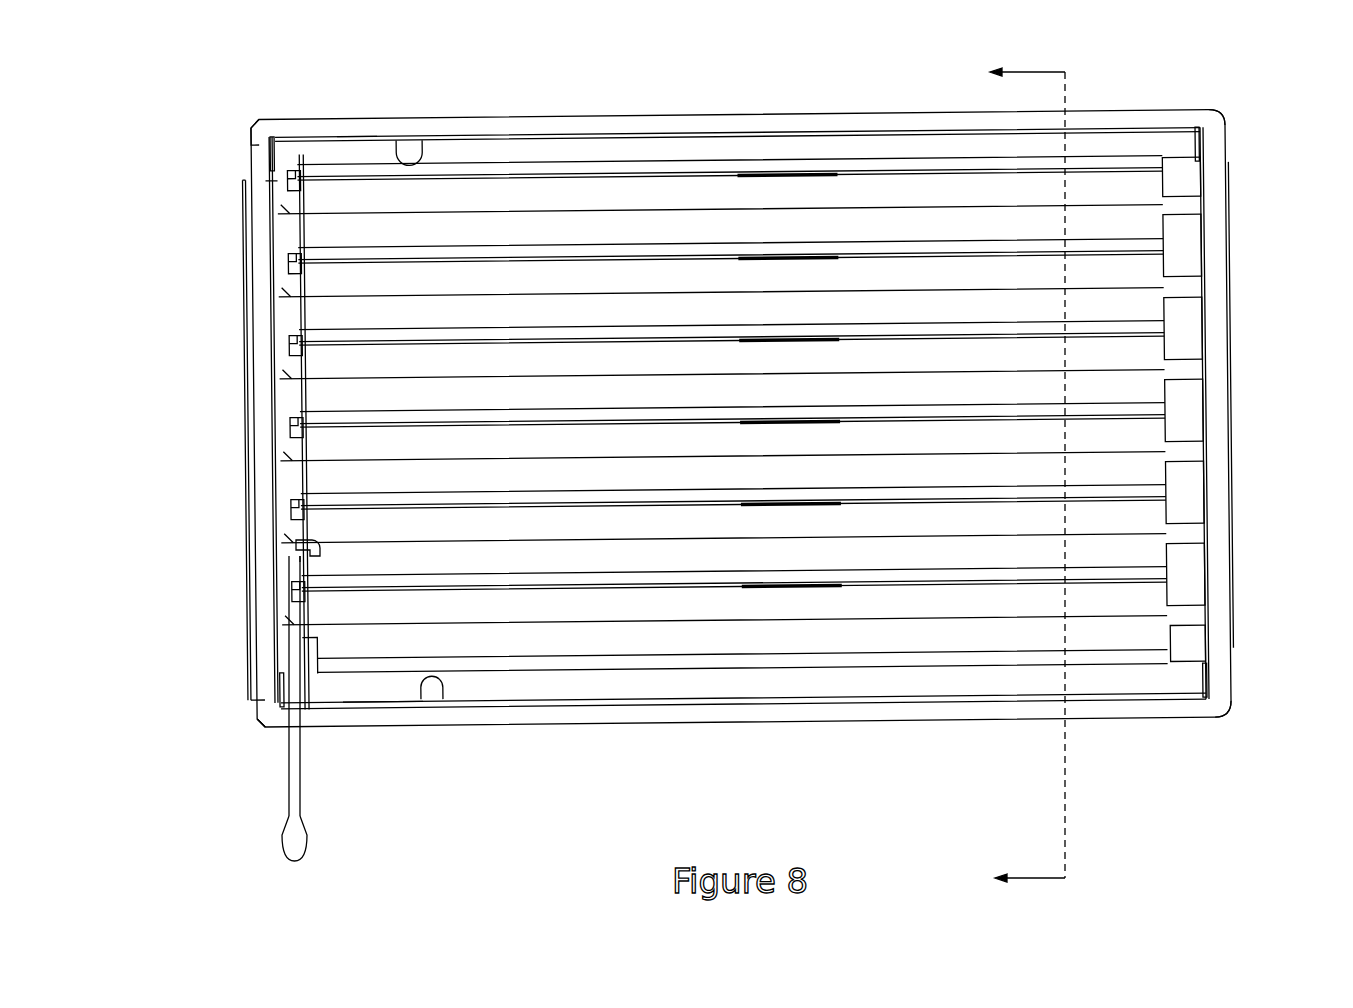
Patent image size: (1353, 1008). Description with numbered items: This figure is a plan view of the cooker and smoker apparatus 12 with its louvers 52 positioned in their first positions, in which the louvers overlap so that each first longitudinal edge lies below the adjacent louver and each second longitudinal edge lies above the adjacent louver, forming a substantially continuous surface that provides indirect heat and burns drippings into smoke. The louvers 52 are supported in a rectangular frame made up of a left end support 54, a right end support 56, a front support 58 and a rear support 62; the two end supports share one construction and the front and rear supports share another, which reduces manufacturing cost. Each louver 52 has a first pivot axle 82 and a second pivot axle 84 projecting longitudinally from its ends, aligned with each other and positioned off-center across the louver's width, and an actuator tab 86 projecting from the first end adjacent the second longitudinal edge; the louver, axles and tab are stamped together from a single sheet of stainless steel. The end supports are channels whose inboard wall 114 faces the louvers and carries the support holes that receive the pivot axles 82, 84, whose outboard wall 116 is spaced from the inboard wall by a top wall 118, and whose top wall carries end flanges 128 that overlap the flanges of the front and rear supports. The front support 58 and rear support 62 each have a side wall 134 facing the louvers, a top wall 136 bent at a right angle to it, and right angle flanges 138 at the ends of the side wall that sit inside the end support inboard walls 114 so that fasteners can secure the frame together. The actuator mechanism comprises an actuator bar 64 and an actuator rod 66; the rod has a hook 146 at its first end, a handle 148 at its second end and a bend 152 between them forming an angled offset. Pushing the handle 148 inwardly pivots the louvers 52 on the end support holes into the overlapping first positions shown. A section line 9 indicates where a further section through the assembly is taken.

The section line 9- 9 is at (1014, 477).
The cooker and smoker apparatus 12 is at (725, 106).
The louver 52 is at (528, 200).
The left end support 54 is at (256, 447).
The right end support 56 is at (1222, 402).
The front support 58 is at (952, 715).
The rear support 62 is at (912, 118).
The actuator bar 64 is at (300, 322).
The actuator rod 66 is at (270, 700).
The first pivot axle 82 is at (288, 217).
The second pivot axle 84 is at (1212, 196).
The actuator tab 86 is at (290, 170).
The inboard wall 114 is at (268, 183).
The outboard wall 116 is at (245, 197).
The top wall 118 is at (262, 138).
The end flanges 128 is at (278, 153).
The side wall 134 is at (403, 150).
The top wall 136 is at (360, 132).
The right angle flanges 138 is at (280, 158).
The hook 146 is at (292, 548).
The handle 148 is at (283, 840).
The bend 152 is at (302, 720).